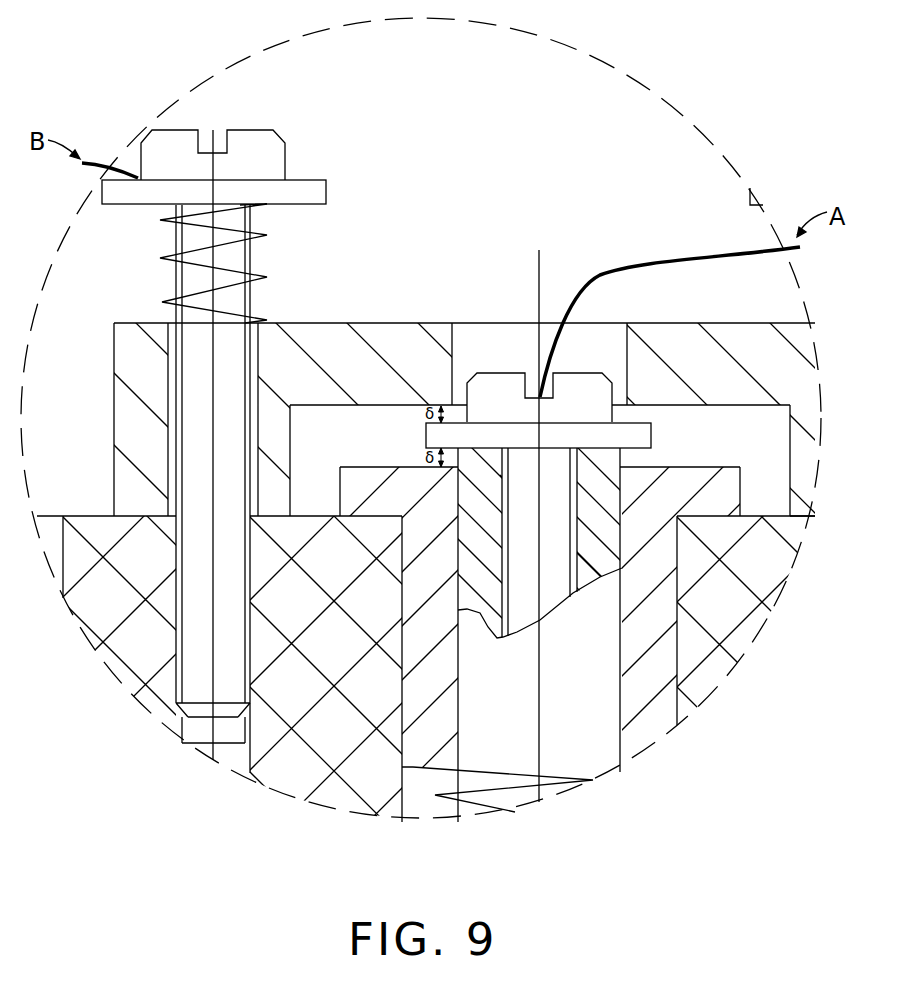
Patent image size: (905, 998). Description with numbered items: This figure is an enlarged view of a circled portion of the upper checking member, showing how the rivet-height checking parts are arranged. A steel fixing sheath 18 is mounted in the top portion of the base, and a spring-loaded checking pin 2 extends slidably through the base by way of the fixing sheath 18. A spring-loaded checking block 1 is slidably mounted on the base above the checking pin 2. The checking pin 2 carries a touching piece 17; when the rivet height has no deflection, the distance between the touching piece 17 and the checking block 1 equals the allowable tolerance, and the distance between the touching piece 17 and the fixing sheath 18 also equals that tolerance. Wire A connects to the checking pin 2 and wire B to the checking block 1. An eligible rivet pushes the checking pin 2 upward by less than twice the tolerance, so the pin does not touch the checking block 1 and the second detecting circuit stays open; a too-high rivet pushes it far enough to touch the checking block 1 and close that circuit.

The checking block 1 is at (405, 367).
The checking pin 2 is at (565, 748).
The touching piece 17 is at (368, 467).
The fixing sheath 18 is at (425, 437).